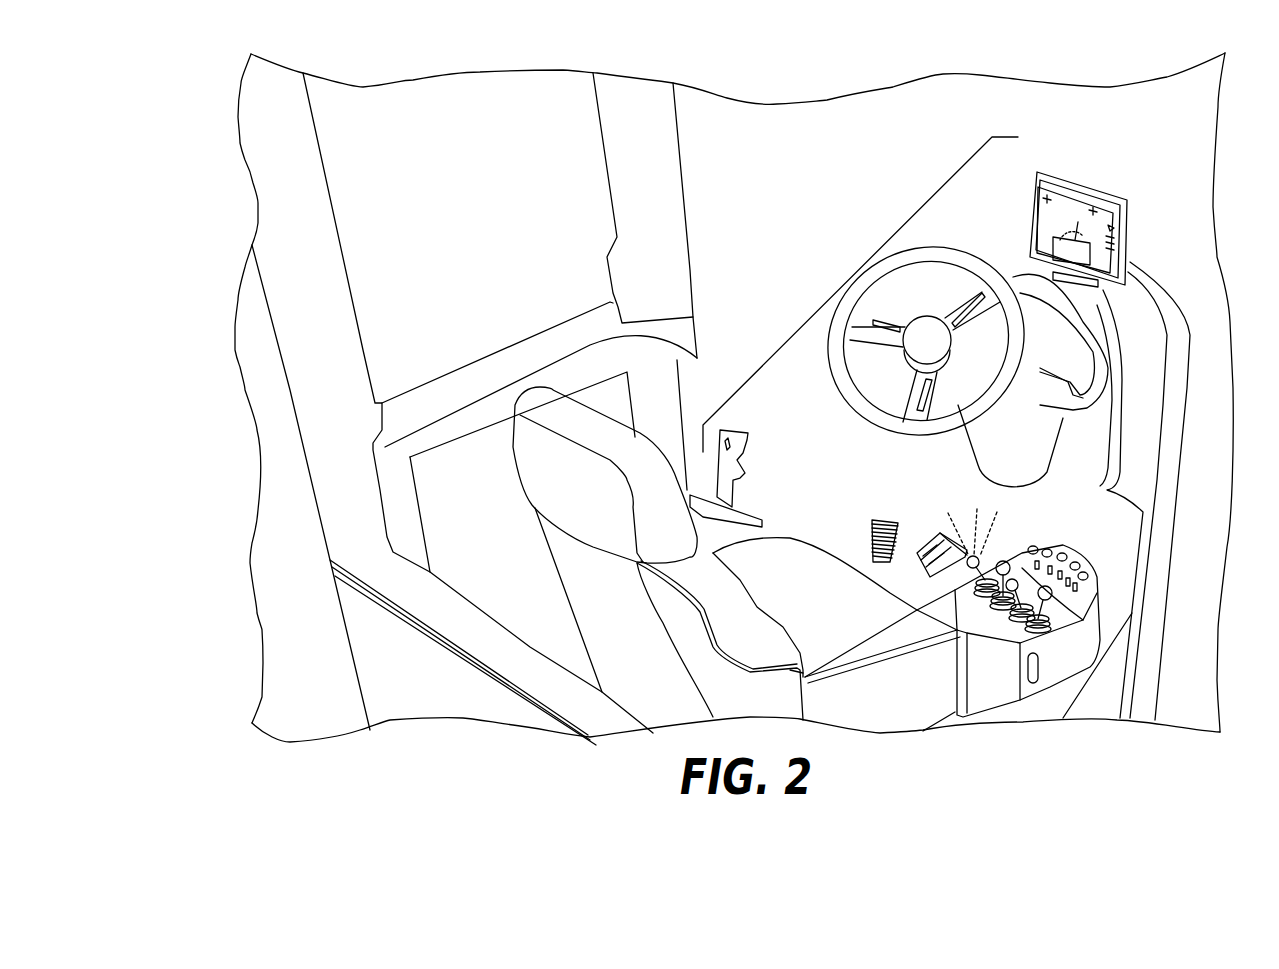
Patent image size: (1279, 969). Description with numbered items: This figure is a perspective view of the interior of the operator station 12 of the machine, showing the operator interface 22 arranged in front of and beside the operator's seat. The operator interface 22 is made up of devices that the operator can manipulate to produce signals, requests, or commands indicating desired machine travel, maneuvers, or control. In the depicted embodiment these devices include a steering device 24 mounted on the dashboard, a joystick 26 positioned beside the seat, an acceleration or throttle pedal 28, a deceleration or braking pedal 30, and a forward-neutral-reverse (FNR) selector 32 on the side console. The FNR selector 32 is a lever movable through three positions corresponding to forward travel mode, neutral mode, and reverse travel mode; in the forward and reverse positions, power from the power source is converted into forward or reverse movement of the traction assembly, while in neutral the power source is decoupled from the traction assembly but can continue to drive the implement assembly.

The operator station 12 is at (1188, 112).
The operator interface 22 is at (843, 283).
The steering device 24 is at (940, 247).
The joystick 26 is at (740, 435).
The acceleration or throttle pedal 28 is at (927, 540).
The deceleration or braking pedal 30 is at (873, 517).
The forward-neutral-reverse (FNR) selector 32 is at (993, 557).